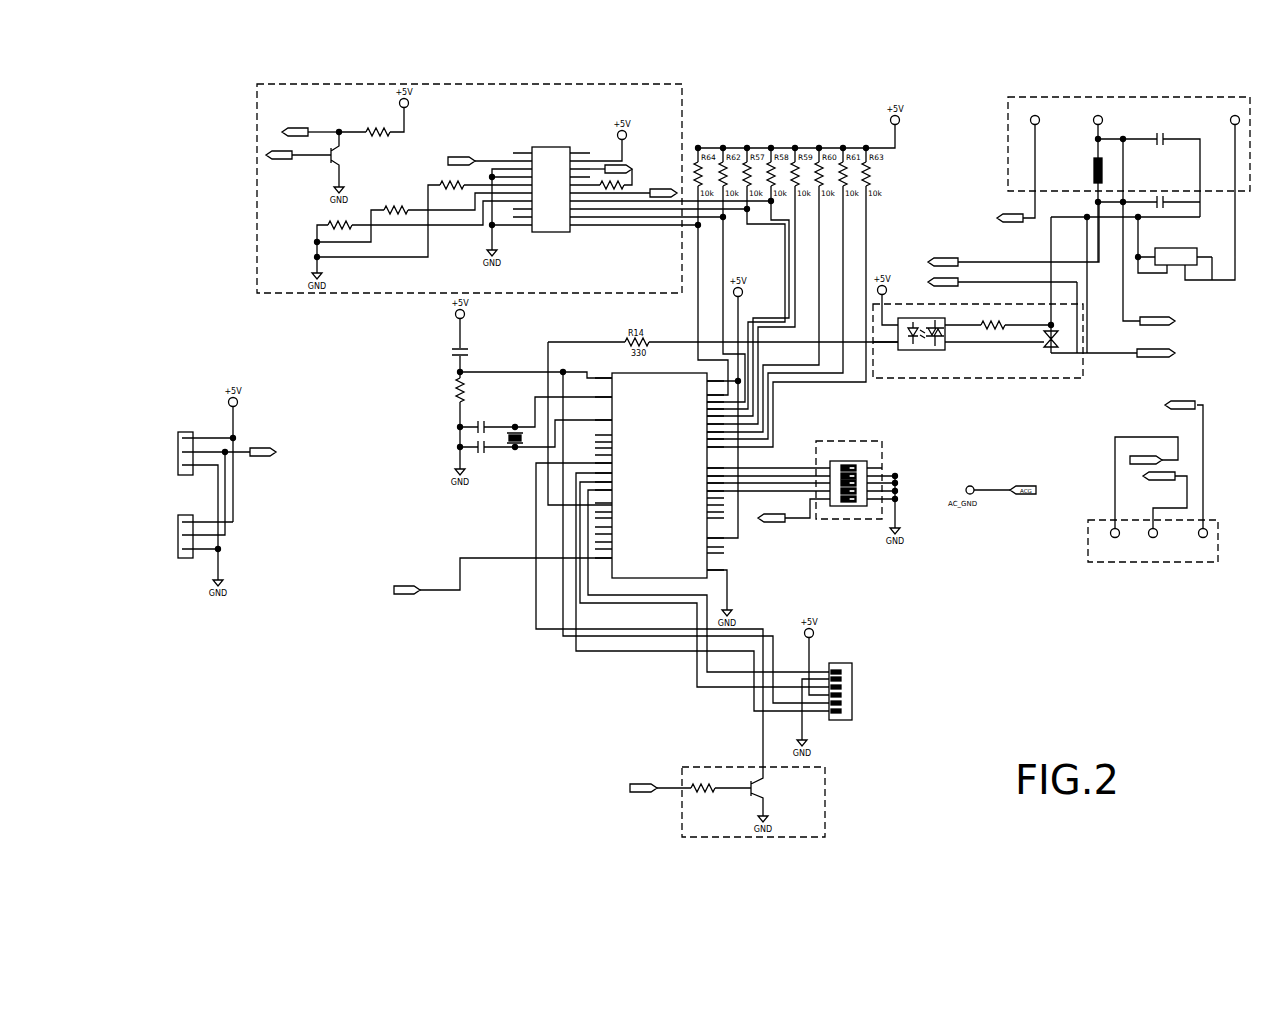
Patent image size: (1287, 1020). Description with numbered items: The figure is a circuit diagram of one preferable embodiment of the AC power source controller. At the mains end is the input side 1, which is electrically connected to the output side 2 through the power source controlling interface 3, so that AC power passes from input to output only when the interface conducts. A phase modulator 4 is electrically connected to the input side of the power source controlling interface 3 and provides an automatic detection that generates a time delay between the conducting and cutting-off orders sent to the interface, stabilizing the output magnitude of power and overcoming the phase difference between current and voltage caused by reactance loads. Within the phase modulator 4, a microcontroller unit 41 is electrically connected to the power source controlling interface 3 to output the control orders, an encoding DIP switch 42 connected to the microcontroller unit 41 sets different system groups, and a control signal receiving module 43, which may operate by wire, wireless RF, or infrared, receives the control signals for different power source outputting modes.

The input side 1 is at (1008, 178).
The output side 2 is at (1147, 563).
The power source controlling interface 3 is at (990, 379).
The phase modulator 4 is at (360, 557).
The microcontroller unit 41 is at (673, 578).
The encoding DIP switch 42 is at (845, 521).
The control signal receiving module 43 is at (257, 215).